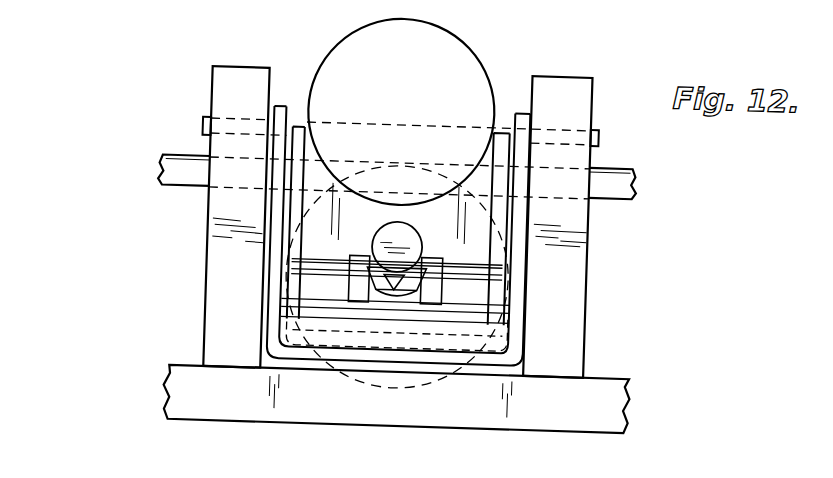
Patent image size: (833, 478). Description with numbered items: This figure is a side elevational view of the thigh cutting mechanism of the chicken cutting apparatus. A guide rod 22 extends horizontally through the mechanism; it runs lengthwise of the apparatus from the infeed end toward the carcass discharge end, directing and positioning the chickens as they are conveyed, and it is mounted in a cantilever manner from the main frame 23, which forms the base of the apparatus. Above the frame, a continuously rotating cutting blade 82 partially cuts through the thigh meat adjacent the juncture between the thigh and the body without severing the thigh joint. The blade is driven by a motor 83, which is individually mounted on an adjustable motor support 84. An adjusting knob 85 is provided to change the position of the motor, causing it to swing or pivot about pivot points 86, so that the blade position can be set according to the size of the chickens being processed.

The guide rod 22 is at (633, 183).
The main frame 23 is at (632, 386).
The cutting blade 82 is at (376, 389).
The motor 83 is at (414, 68).
The adjustable motor support 84 is at (287, 300).
The adjusting knob 85 is at (423, 244).
The pivot point 86 is at (203, 131).